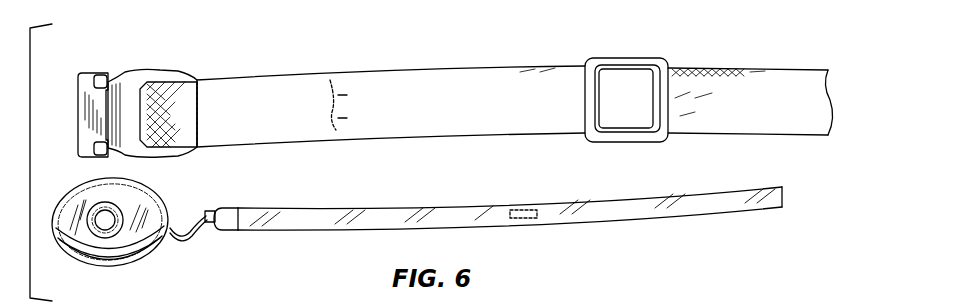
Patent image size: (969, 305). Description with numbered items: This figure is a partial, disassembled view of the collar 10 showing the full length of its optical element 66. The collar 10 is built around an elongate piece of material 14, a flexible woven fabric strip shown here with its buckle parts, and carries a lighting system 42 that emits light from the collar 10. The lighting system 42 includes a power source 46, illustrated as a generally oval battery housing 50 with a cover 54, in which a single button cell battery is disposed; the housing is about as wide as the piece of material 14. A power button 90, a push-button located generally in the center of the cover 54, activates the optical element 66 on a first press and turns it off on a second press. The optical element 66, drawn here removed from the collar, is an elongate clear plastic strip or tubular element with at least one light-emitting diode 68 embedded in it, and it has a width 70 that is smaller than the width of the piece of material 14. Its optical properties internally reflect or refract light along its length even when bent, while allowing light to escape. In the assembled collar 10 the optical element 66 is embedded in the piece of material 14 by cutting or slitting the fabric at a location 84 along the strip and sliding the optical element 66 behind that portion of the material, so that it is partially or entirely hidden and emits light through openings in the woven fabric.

The collar 10 is at (543, 42).
The elongate piece of material 14 is at (397, 142).
The lighting system 42 is at (251, 192).
The power source 46 is at (71, 196).
The battery housing 50 is at (151, 265).
The cover 54 is at (80, 240).
The optical element 66 is at (265, 237).
The light-emitting diode 68 is at (525, 210).
The width 70 is at (365, 235).
The location 84 is at (332, 96).
The power button 90 is at (110, 217).